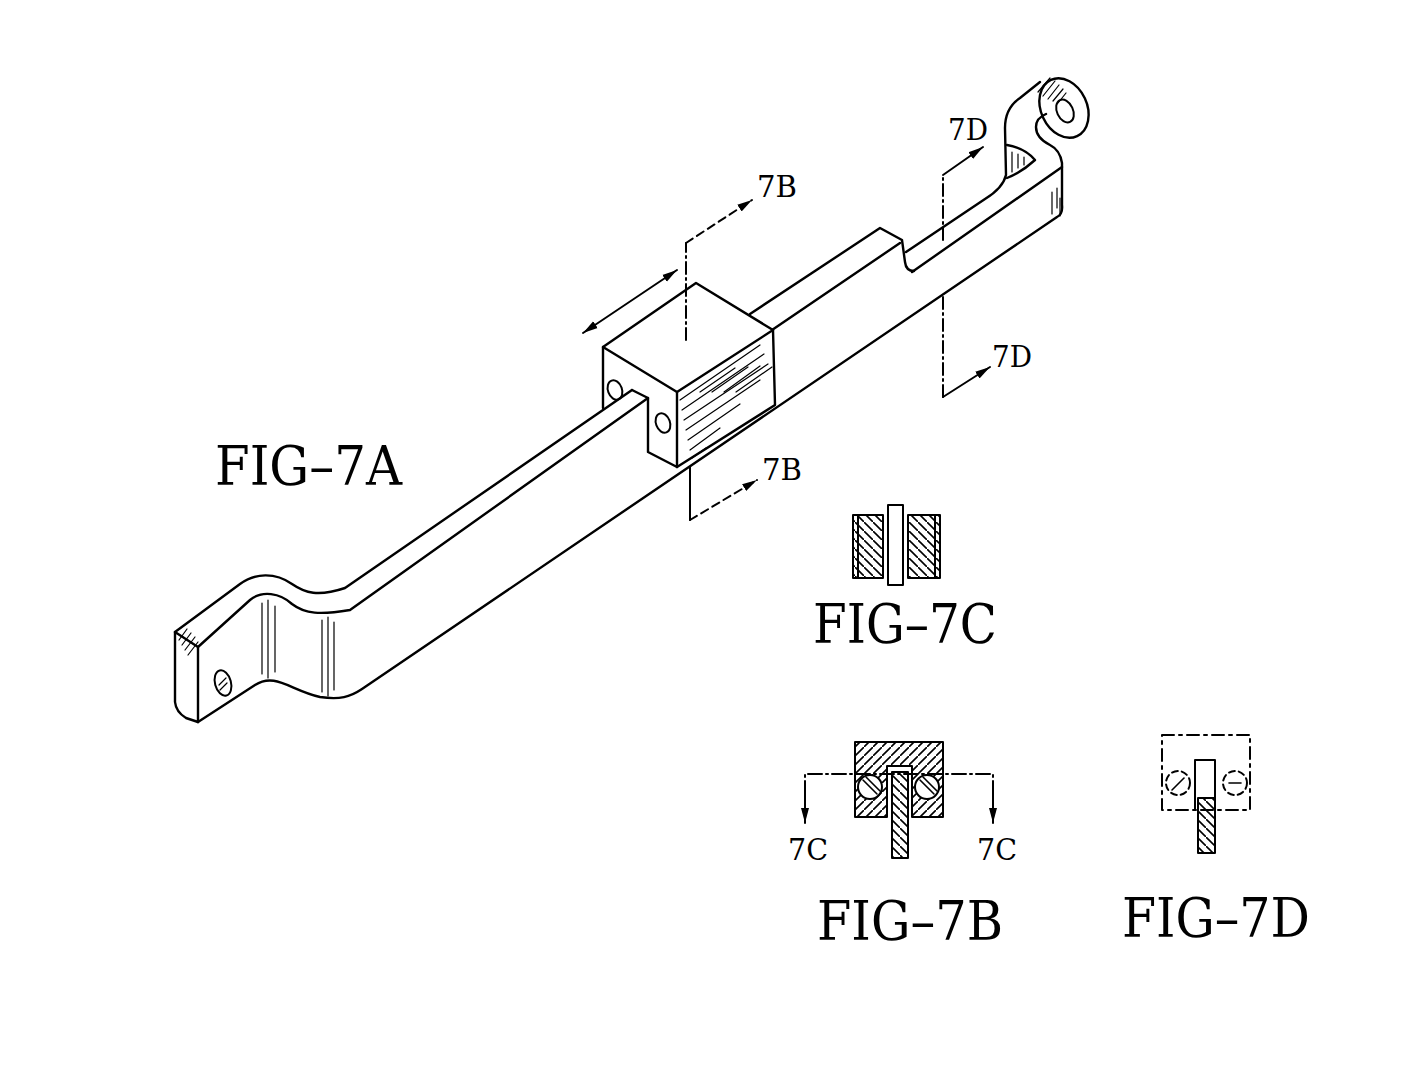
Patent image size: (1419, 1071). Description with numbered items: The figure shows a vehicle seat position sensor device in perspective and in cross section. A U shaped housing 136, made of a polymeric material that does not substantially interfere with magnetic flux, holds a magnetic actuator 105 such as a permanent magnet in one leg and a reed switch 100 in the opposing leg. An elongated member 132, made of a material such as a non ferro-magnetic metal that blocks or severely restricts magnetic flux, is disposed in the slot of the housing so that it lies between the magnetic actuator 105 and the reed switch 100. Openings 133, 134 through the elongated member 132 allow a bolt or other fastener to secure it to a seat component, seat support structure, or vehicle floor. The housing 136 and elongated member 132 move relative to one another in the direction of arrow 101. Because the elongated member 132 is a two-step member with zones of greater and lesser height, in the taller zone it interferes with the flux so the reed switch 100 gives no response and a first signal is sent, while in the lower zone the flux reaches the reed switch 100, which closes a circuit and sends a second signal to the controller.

In FIG. 7A, the reed switch 100 is at (660, 432).
In FIG. 7C, the reed switch 100 is at (927, 540).
In FIG. 7B, the reed switch 100 is at (930, 787).
In FIG. 7D, the reed switch 100 is at (1240, 780).
In FIG. 7A, the arrow 101 is at (618, 307).
In FIG. 7A, the magnetic actuator 105 is at (606, 394).
In FIG. 7C, the magnetic actuator 105 is at (870, 545).
In FIG. 7B, the magnetic actuator 105 is at (877, 793).
In FIG. 7D, the magnetic actuator 105 is at (1182, 786).
In FIG. 7A, the elongated member 132 is at (500, 615).
In FIG. 7C, the elongated member 132 is at (908, 506).
In FIG. 7B, the elongated member 132 is at (912, 845).
In FIG. 7D, the elongated member 132 is at (1218, 838).
In FIG. 7A, the opening 133 is at (1070, 114).
In FIG. 7A, the opening 134 is at (229, 682).
In FIG. 7A, the U shaped housing 136 is at (762, 388).
In FIG. 7C, the U shaped housing 136 is at (852, 556).
In FIG. 7B, the U shaped housing 136 is at (912, 738).
In FIG. 7D, the U shaped housing 136 is at (1216, 733).